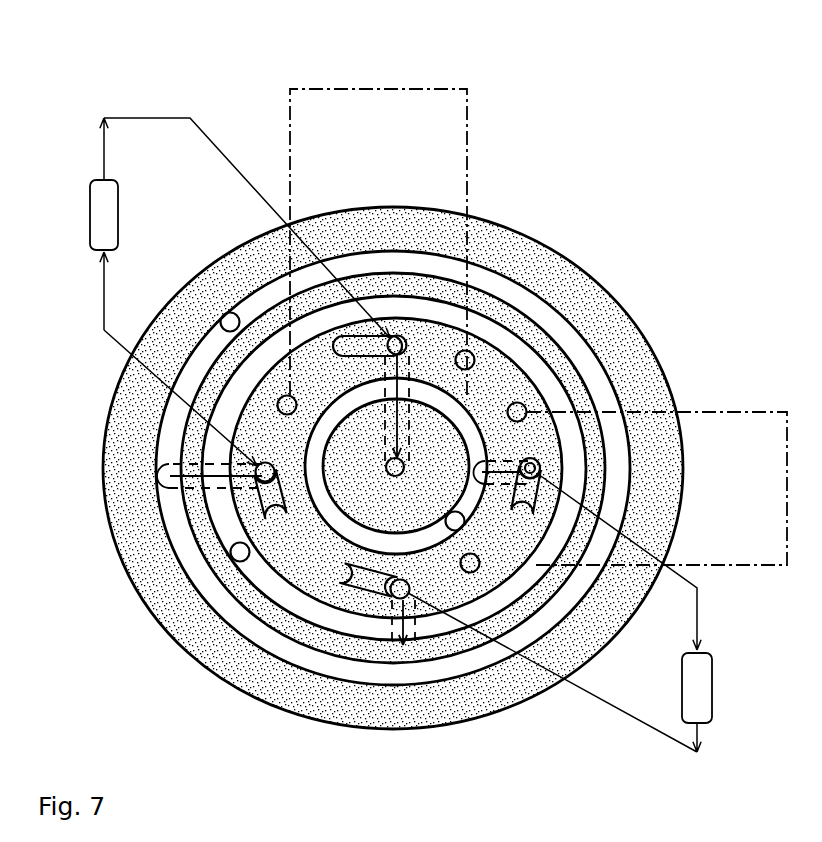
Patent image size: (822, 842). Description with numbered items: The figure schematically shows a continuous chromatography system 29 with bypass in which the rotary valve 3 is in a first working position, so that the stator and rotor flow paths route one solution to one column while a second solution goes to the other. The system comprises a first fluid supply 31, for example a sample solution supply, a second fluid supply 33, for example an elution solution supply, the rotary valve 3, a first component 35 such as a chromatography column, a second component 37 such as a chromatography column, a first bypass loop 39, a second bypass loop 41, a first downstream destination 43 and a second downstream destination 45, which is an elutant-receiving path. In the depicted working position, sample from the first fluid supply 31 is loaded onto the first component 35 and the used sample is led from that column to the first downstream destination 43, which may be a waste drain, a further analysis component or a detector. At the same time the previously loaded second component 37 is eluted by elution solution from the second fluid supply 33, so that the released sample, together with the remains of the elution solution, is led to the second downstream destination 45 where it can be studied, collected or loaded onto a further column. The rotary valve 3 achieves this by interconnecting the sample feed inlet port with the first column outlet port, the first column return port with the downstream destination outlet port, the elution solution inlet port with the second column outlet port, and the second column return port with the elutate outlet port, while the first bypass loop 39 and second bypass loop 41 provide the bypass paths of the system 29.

The rotary valve 3 is at (603, 282).
The continuous chromatography system 29 is at (233, 109).
The first fluid supply 31 is at (463, 525).
The second fluid supply 33 is at (215, 308).
The first component 35 is at (712, 673).
The second component 37 is at (90, 226).
The first bypass loop 39 is at (362, 88).
The second bypass loop 41 is at (717, 410).
The first downstream destination 43 is at (232, 558).
The second downstream destination 45 is at (396, 476).